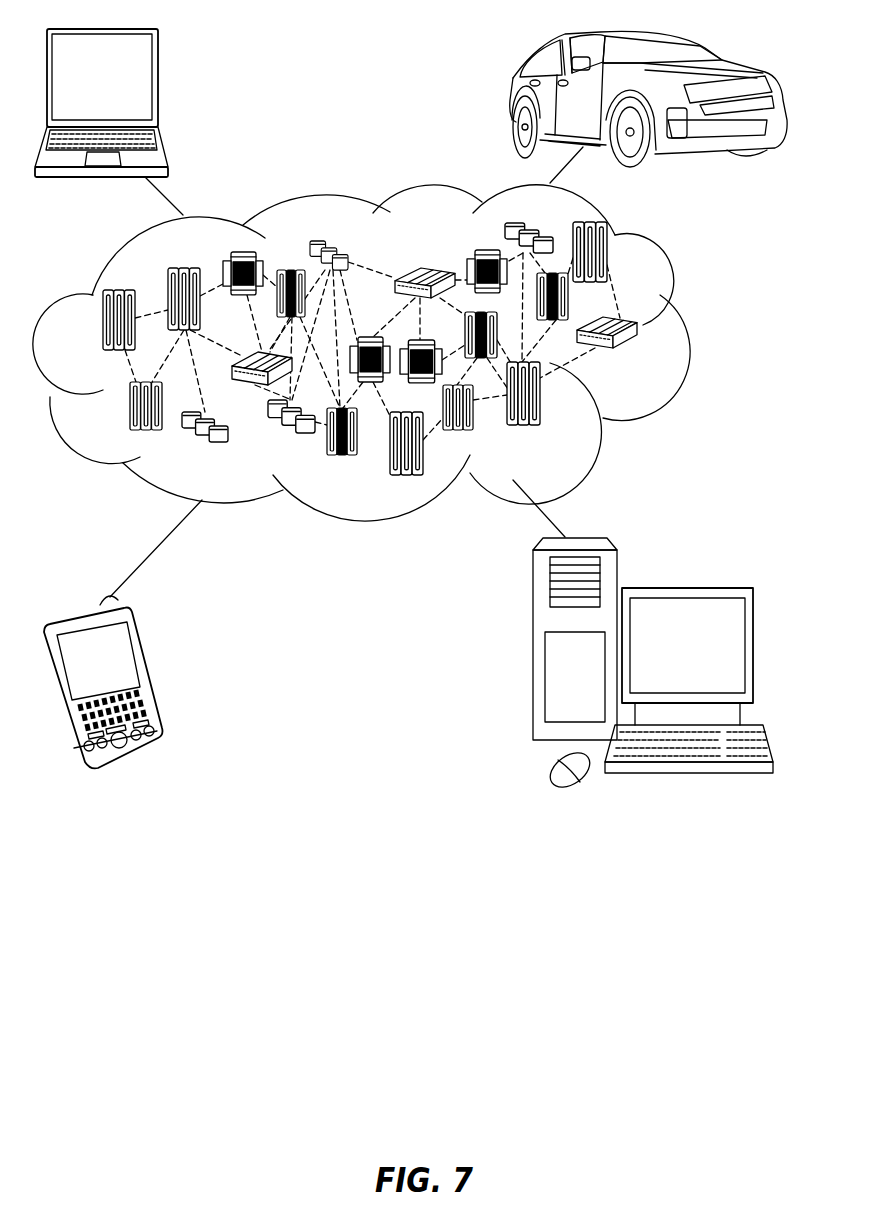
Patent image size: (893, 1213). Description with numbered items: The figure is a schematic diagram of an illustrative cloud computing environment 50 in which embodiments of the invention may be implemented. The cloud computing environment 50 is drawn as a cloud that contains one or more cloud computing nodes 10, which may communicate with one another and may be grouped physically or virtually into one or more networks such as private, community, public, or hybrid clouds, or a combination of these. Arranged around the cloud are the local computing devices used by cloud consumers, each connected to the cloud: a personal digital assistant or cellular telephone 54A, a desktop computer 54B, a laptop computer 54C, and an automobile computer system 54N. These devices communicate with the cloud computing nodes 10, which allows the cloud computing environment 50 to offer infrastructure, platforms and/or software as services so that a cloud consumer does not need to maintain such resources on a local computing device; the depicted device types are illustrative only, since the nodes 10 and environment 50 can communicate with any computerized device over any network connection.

The cloud computing node 10 is at (648, 364).
The cloud computing environment 50 is at (688, 328).
The personal digital assistant or cellular telephone 54A is at (150, 670).
The desktop computer 54B is at (685, 587).
The laptop computer 54C is at (158, 85).
The automobile computer system 54N is at (510, 97).